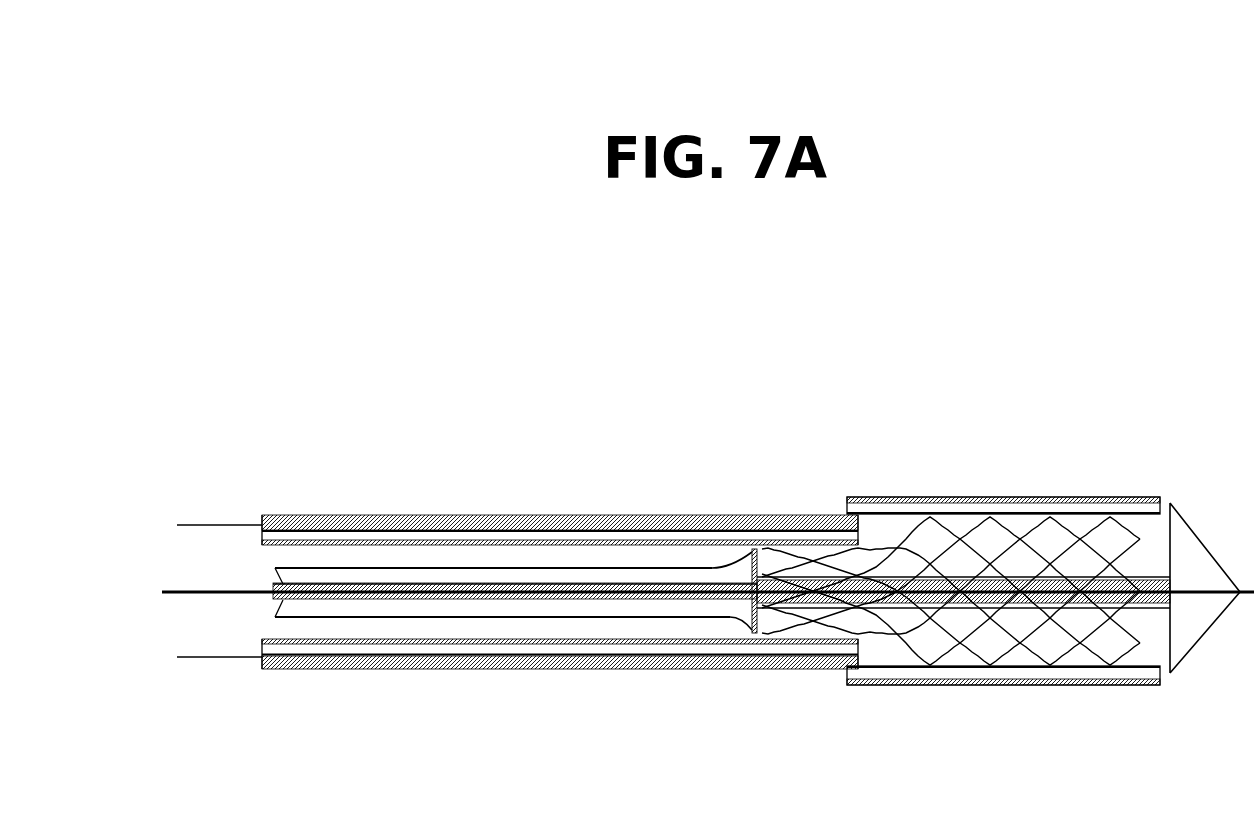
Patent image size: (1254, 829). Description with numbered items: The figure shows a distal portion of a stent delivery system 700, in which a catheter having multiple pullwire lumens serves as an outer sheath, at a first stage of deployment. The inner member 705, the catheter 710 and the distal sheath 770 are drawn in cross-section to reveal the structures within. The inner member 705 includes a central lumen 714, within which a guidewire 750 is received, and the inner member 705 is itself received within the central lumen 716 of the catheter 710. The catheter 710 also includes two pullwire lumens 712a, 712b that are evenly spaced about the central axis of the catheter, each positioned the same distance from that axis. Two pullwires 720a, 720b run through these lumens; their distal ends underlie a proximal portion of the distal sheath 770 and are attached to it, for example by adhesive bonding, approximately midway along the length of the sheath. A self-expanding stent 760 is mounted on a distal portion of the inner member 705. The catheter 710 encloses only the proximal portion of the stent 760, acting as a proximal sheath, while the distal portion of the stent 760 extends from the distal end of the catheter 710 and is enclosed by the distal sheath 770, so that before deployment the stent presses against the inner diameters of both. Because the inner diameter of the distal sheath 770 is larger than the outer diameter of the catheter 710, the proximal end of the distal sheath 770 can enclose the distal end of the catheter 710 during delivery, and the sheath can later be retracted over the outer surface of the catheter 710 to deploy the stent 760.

The stent delivery system 700 is at (198, 262).
The inner member 705 is at (733, 611).
The catheter 710 is at (360, 514).
The pullwire lumen 712a is at (470, 523).
The pullwire lumen 712b is at (485, 663).
The central lumen 714 is at (350, 597).
The central lumen 716 is at (608, 553).
The pullwire 720a is at (543, 525).
The pullwire 720b is at (558, 658).
The guidewire 750 is at (250, 595).
The stent 760 is at (880, 656).
The distal sheath 770 is at (940, 507).